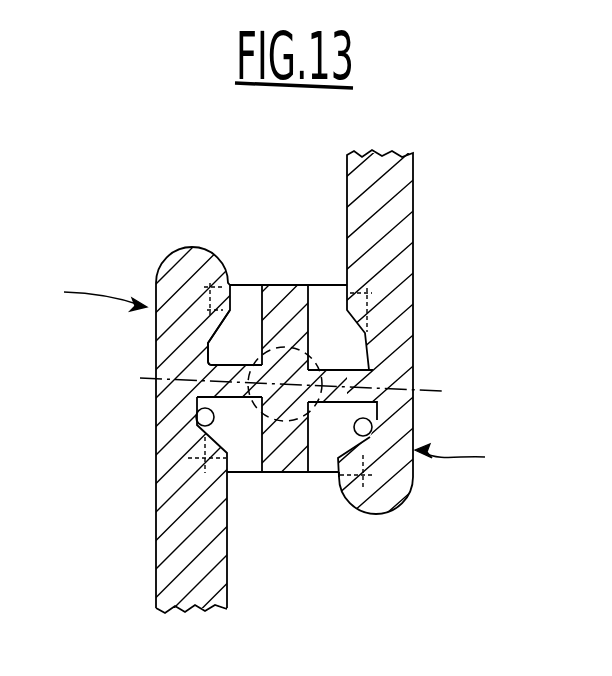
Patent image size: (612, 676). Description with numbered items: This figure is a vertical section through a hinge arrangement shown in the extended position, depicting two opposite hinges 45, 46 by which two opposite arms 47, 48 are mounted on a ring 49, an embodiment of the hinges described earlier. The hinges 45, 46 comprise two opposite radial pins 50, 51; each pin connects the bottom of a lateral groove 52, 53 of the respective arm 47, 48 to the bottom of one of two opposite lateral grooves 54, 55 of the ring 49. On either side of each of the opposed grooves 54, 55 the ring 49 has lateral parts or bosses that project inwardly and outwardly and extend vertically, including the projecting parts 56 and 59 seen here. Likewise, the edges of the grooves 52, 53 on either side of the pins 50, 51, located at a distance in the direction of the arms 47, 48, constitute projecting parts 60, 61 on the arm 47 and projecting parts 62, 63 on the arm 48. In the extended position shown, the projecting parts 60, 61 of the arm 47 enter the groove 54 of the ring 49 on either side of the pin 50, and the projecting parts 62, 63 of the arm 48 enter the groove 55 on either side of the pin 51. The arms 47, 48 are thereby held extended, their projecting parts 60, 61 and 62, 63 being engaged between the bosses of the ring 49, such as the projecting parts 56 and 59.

The hinge 45 is at (88, 292).
The hinge 46 is at (466, 458).
The arm 47 is at (172, 539).
The arm 48 is at (387, 188).
The ring 49 is at (292, 302).
The radial pin 50 is at (205, 385).
The radial pin 51 is at (378, 386).
The lateral groove 52 is at (198, 428).
The lateral groove 53 is at (374, 420).
The lateral groove 54 is at (246, 302).
The lateral groove 55 is at (322, 462).
The projecting part 56 is at (207, 359).
The projecting part 59 is at (352, 355).
The projecting part 60 is at (223, 307).
The projecting part 61 is at (205, 458).
The projecting part 62 is at (358, 468).
The projecting part 63 is at (357, 305).